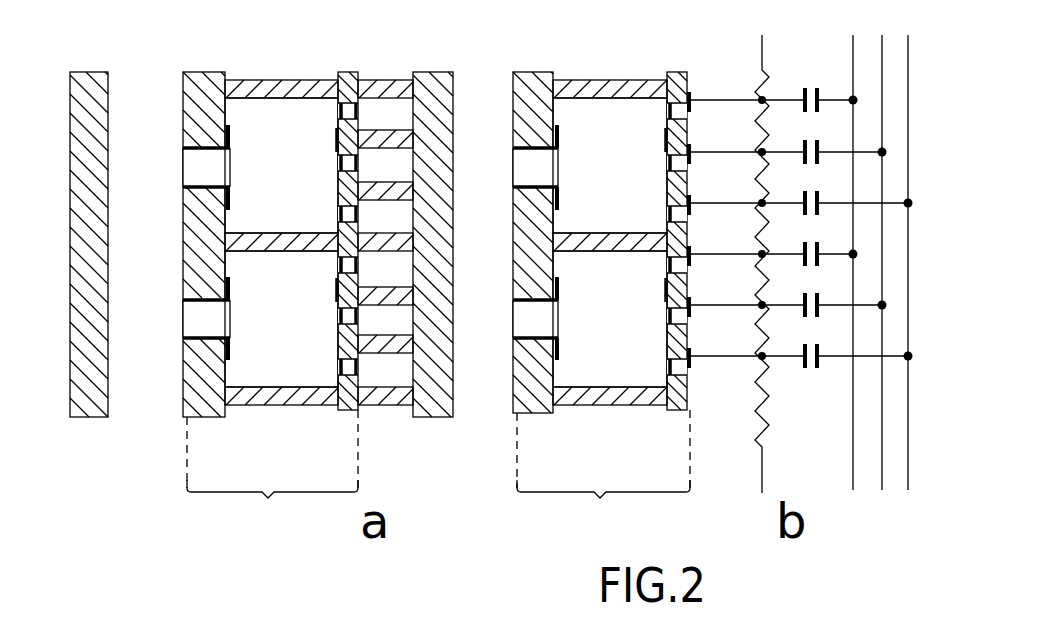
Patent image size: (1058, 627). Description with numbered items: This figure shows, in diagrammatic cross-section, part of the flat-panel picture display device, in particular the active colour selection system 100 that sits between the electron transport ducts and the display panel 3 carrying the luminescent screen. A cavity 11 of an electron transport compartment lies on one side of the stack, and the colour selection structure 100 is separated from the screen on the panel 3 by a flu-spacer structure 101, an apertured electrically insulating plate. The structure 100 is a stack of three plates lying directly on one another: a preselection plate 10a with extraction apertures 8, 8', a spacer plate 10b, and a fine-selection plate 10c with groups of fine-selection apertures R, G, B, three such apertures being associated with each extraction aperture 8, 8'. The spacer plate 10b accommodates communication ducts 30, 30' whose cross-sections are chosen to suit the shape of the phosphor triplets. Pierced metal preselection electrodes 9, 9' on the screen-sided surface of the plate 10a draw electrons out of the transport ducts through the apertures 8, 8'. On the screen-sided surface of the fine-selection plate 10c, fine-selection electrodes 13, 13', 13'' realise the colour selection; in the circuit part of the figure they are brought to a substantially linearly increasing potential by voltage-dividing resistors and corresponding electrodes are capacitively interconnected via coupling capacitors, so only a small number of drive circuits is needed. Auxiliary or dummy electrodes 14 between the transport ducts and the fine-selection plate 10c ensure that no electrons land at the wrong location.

The cavity 11 is at (133, 88).
The extraction aperture 8 is at (381, 107).
The extraction aperture 8' is at (343, 383).
The preselection electrode 9 is at (409, 169).
The preselection electrode 9' is at (411, 314).
The preselection plate 10a is at (207, 407).
The spacer plate 10b is at (307, 407).
The fine-selection plate 10c is at (350, 408).
The fine-selection electrode 13 is at (597, 200).
The fine-selection electrode 13' is at (611, 227).
The fine-selection electrode 13'' is at (624, 232).
The auxiliary electrode 14 is at (338, 140).
The display panel 3 is at (432, 98).
The fine-selection aperture for red R is at (360, 112).
The fine-selection aperture for green G is at (360, 165).
The fine-selection aperture for blue B is at (360, 216).
The communication duct 30 is at (446, 165).
The communication duct 30' is at (446, 319).
The flu-spacer structure 101 is at (405, 408).
The active colour selection system 100 is at (438, 472).